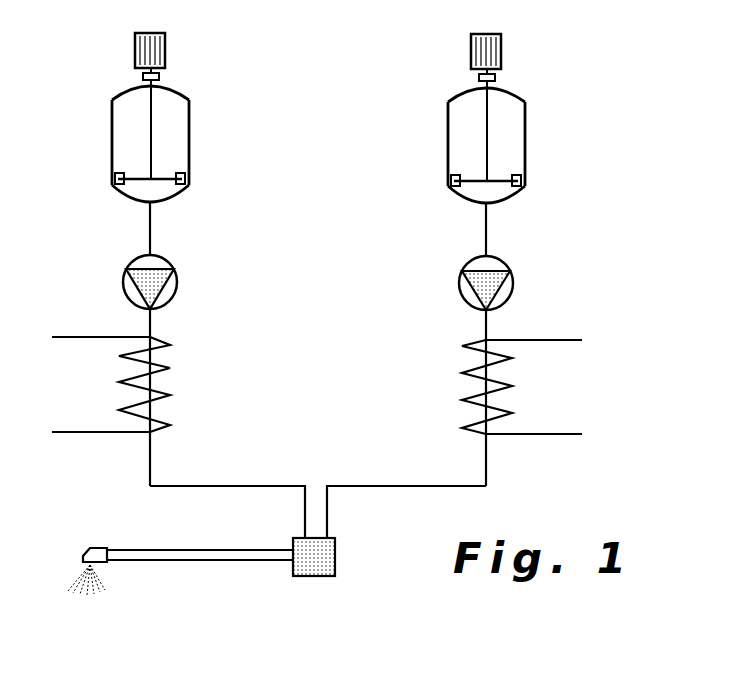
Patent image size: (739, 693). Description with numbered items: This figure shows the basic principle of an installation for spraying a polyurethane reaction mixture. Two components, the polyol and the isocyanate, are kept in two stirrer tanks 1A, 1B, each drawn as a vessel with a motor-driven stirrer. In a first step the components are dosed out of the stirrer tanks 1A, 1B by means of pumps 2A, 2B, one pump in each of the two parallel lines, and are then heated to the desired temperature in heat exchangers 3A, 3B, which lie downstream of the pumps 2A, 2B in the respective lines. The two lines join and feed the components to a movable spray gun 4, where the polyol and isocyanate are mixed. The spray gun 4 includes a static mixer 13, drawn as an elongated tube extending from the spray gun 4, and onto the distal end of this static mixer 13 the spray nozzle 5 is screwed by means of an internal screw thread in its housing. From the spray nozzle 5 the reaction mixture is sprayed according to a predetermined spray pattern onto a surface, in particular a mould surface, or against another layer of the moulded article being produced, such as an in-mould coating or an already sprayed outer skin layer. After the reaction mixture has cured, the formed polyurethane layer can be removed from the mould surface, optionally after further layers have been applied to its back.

The stirrer tank 1A is at (172, 128).
The stirrer tank 1B is at (512, 133).
The pump 2A is at (170, 292).
The pump 2B is at (500, 295).
The heat exchanger 3A is at (163, 393).
The heat exchanger 3B is at (507, 360).
The movable spray gun 4 is at (318, 557).
The static mixer 13 is at (165, 553).
The spray nozzle 5 is at (93, 552).